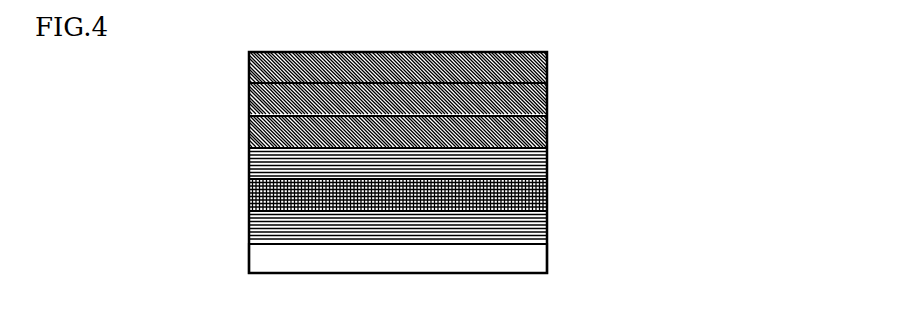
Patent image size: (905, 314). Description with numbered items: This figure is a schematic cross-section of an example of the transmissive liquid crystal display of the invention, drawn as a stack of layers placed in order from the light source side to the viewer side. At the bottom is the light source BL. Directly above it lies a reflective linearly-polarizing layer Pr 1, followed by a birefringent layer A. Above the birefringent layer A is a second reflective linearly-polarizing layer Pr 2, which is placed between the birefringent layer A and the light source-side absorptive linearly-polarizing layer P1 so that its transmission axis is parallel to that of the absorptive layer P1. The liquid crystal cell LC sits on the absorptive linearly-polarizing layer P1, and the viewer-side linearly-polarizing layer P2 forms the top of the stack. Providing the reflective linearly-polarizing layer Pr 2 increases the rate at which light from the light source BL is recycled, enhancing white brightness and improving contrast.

The viewer-side linearly-polarizing layer P2 is at (520, 60).
The liquid crystal cell LC is at (520, 92).
The light source-side absorptive linearly-polarizing layer P1 is at (522, 127).
The reflective linearly-polarizing layer Pr 2 is at (520, 160).
The birefringent layer A is at (520, 190).
The reflective linearly-polarizing layer Pr 1 is at (520, 222).
The light source BL is at (525, 254).